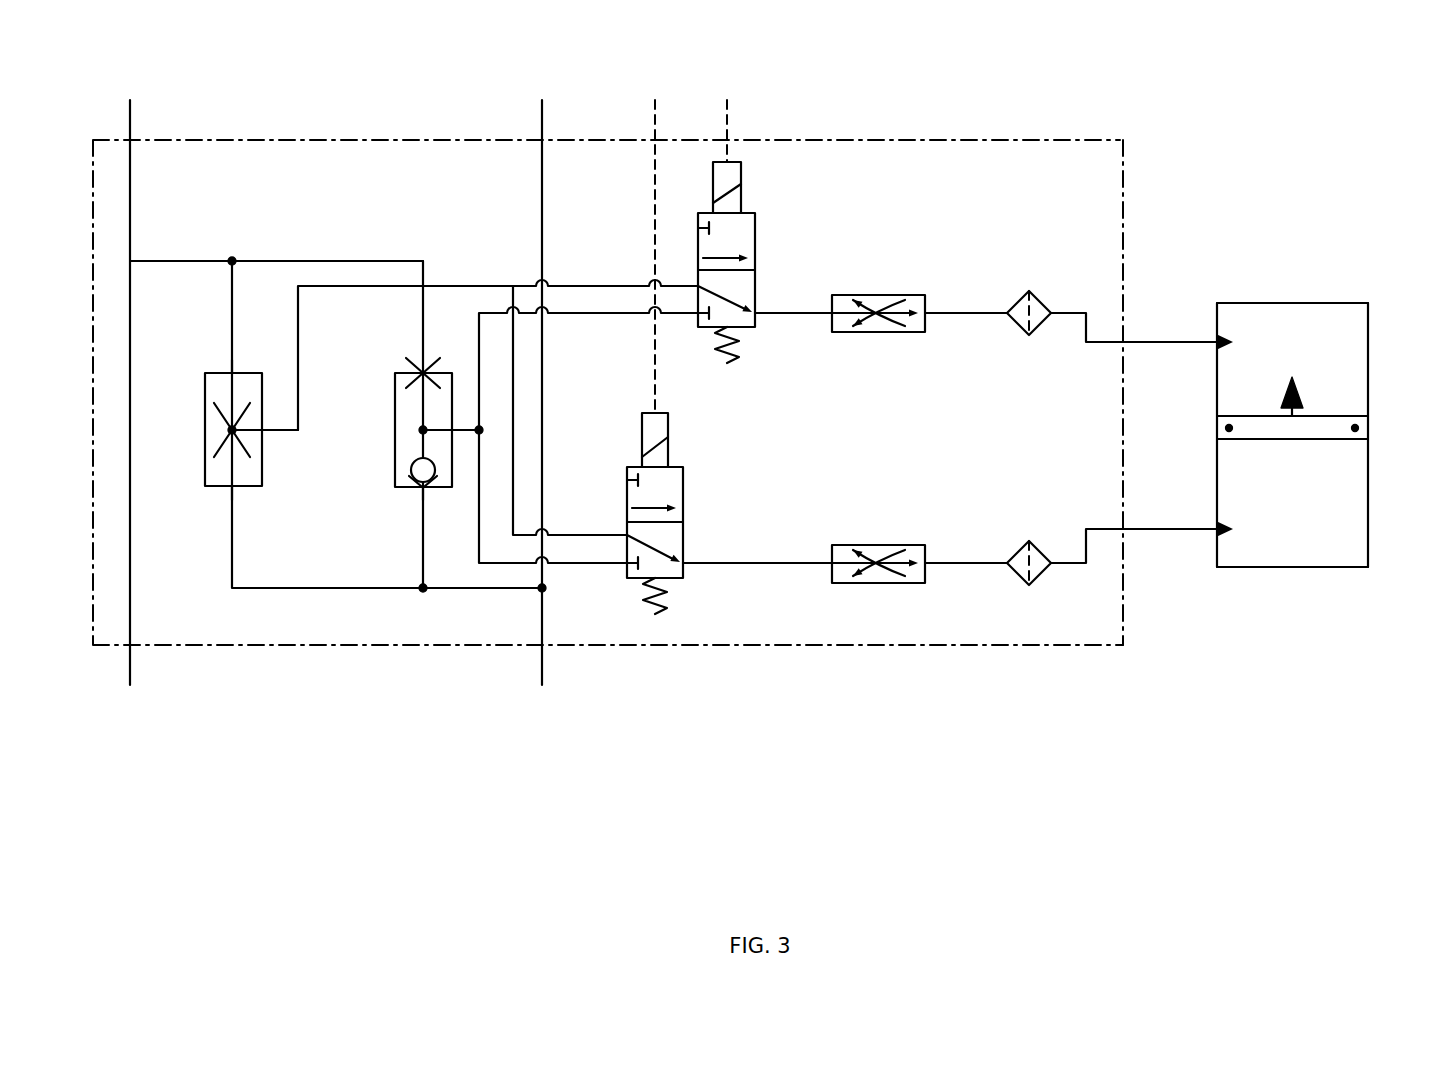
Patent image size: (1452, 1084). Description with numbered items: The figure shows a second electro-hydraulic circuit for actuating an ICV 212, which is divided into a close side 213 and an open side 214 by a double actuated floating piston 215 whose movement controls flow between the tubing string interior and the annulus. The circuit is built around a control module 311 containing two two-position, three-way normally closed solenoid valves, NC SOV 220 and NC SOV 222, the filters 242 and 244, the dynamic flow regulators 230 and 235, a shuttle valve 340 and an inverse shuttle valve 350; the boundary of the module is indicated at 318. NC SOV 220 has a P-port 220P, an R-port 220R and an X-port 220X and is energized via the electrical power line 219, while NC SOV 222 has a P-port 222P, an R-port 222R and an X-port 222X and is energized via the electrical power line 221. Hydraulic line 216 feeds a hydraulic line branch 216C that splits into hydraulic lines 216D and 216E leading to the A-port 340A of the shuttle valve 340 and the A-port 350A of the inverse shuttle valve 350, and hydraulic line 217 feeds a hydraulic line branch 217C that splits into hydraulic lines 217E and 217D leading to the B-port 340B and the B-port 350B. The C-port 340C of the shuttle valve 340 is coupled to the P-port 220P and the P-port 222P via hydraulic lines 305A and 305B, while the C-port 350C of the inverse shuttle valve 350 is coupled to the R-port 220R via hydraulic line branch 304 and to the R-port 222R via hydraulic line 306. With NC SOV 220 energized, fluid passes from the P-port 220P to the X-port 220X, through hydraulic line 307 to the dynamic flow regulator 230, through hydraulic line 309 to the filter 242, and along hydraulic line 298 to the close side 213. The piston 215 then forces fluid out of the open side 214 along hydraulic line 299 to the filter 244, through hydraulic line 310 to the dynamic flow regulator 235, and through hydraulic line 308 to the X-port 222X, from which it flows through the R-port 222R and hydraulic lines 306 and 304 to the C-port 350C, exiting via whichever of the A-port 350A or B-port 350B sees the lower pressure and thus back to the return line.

The ICV 212 is at (1345, 303).
The close side 213 is at (1292, 330).
The open side 214 is at (1292, 528).
The double actuated floating piston 215 is at (1320, 430).
The hydraulic line 216 is at (132, 165).
The hydraulic line branch 216C is at (180, 260).
The hydraulic line 216D is at (312, 260).
The hydraulic line 216E is at (230, 284).
The hydraulic line 217 is at (542, 168).
The hydraulic line branch 217C is at (455, 600).
The hydraulic line 217D is at (305, 600).
The hydraulic line 217E is at (416, 576).
The electrical power line 219 is at (727, 121).
The NC SOV 220 is at (755, 238).
The R-port 220R is at (698, 280).
The P-port 220P is at (698, 320).
The X-port 220X is at (760, 316).
The electrical power line 221 is at (655, 166).
The NC SOV 222 is at (683, 495).
The R-port 222R is at (625, 533).
The P-port 222P is at (625, 568).
The X-port 222X is at (688, 566).
The dynamic flow regulator 230 is at (915, 332).
The dynamic flow regulator 235 is at (900, 583).
The filter 242 is at (1049, 298).
The filter 244 is at (1043, 575).
The hydraulic line 298 is at (1163, 338).
The hydraulic line 299 is at (1150, 530).
The hydraulic line branch 304 is at (493, 283).
The hydraulic line 305A is at (478, 358).
The hydraulic line 305B is at (512, 570).
The hydraulic line 306 is at (514, 430).
The hydraulic line 307 is at (805, 308).
The hydraulic line 308 is at (760, 563).
The hydraulic line 309 is at (975, 308).
The hydraulic line 310 is at (965, 563).
The control module 311 is at (1061, 140).
The module interface boundary 318 is at (1123, 187).
The shuttle valve 340 is at (395, 470).
The A-port 340A is at (420, 371).
The B-port 340B is at (415, 494).
The C-port 340C is at (456, 426).
The inverse shuttle valve 350 is at (205, 445).
The A-port 350A is at (228, 371).
The B-port 350B is at (228, 491).
The C-port 350C is at (265, 436).